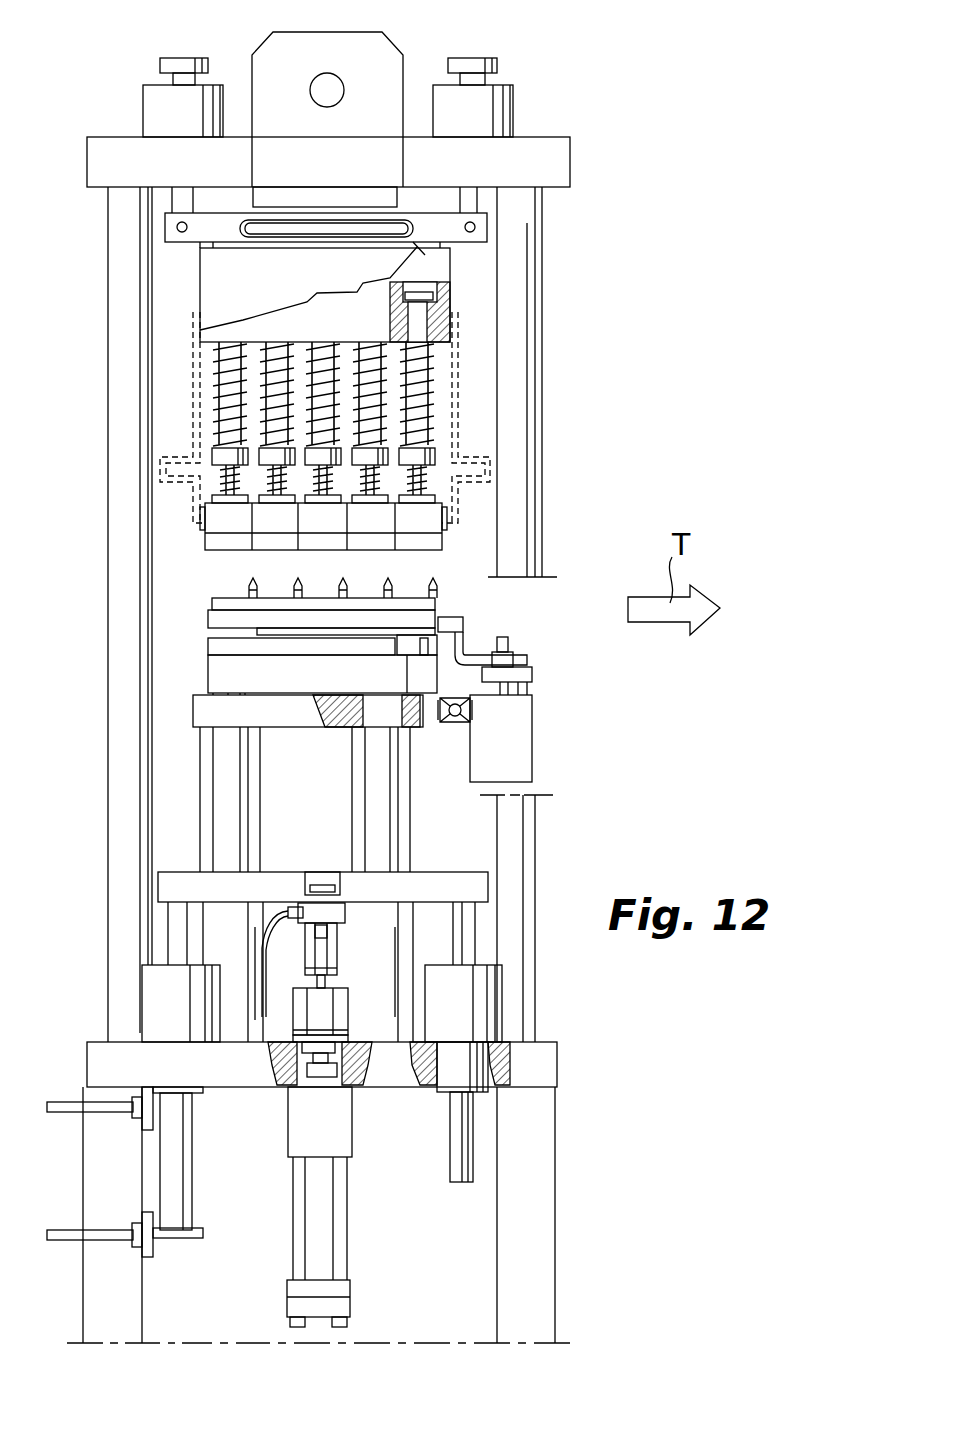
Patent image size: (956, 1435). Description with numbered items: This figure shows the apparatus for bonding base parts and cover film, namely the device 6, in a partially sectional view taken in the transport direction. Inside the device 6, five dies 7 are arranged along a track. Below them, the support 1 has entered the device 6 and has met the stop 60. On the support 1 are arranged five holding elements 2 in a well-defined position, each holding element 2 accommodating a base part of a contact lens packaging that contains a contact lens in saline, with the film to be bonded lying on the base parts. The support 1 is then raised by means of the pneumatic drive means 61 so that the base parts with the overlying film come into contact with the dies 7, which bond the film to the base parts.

The device 6 is at (641, 119).
The dies 7 is at (471, 404).
The support 1 is at (245, 618).
The holding elements 2 is at (403, 603).
The stop 60 is at (450, 628).
The pneumatic drive means 61 is at (208, 935).